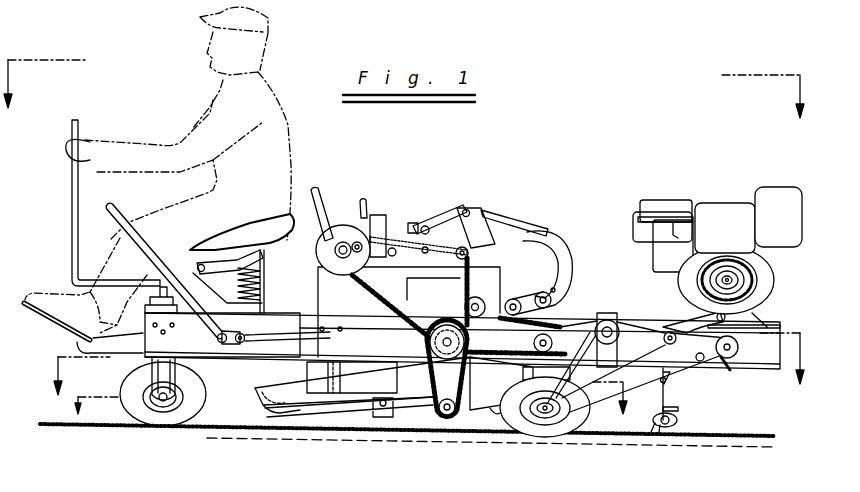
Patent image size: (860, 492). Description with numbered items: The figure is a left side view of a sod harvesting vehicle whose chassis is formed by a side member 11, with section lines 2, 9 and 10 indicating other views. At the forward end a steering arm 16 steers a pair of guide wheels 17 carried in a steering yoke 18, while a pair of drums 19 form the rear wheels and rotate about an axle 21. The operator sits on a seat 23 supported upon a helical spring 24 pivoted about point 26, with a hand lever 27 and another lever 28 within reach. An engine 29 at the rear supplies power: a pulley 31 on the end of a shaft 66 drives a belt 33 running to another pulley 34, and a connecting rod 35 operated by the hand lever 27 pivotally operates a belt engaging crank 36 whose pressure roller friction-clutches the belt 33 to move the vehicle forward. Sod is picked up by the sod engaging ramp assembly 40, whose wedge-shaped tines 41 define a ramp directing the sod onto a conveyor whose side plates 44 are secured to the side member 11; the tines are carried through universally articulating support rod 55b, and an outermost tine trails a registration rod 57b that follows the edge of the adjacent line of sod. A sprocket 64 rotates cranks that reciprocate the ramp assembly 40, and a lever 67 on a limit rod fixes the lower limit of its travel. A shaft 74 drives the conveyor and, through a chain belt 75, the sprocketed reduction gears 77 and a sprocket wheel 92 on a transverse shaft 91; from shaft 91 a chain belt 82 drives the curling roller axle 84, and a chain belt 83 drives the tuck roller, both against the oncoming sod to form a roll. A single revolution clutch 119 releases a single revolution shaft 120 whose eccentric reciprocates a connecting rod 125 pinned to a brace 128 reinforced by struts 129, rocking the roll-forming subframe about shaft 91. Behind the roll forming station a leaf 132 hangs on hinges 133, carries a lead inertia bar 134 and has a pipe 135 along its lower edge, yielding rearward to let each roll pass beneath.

The section line 2- 2 is at (405, 106).
The section line 9- 9 is at (350, 408).
The section line 10- 10 is at (429, 374).
The side member 11 is at (190, 347).
The steering arm 16 is at (72, 182).
The guide wheels 17 is at (133, 388).
The steering yoke 18 is at (172, 380).
The drums 19 is at (488, 419).
The axle 21 is at (545, 411).
The seat 23 is at (252, 249).
The helical spring 24 is at (262, 290).
The pivot point 26 is at (188, 262).
The hand lever 27 is at (127, 222).
The lever 28 is at (313, 190).
The engine 29 is at (712, 202).
The pulley 31 is at (723, 362).
The belt 33 is at (670, 387).
The pulley 34 is at (578, 397).
The connecting rod 35 is at (462, 341).
The belt engaging crank 36 is at (687, 307).
The sod engaging ramp assembly 40 is at (310, 446).
The tines 41 is at (253, 403).
The side plates 44 is at (428, 387).
The support rod 55b is at (403, 414).
The registration rod 57b is at (390, 447).
The sprocket 64 is at (519, 384).
The shaft 66 is at (742, 345).
The lever 67 is at (364, 202).
The shaft 74 is at (570, 330).
The chain belt 75 is at (467, 281).
The sprocketed reduction gears 77 is at (463, 340).
The chain belt 82 is at (547, 267).
The chain belt 83 is at (557, 270).
The axle 84 is at (560, 290).
The shaft 91 is at (468, 247).
The sprocket wheel 92 is at (447, 262).
The single revolution clutch 119 is at (337, 228).
The single revolution shaft 120 is at (335, 251).
The connecting rod 125 is at (447, 212).
The brace 128 is at (476, 224).
The struts 129 is at (497, 217).
The leaf 132 is at (655, 425).
The hinges 133 is at (670, 404).
The inertia bar 134 is at (680, 411).
The pipe 135 is at (673, 427).